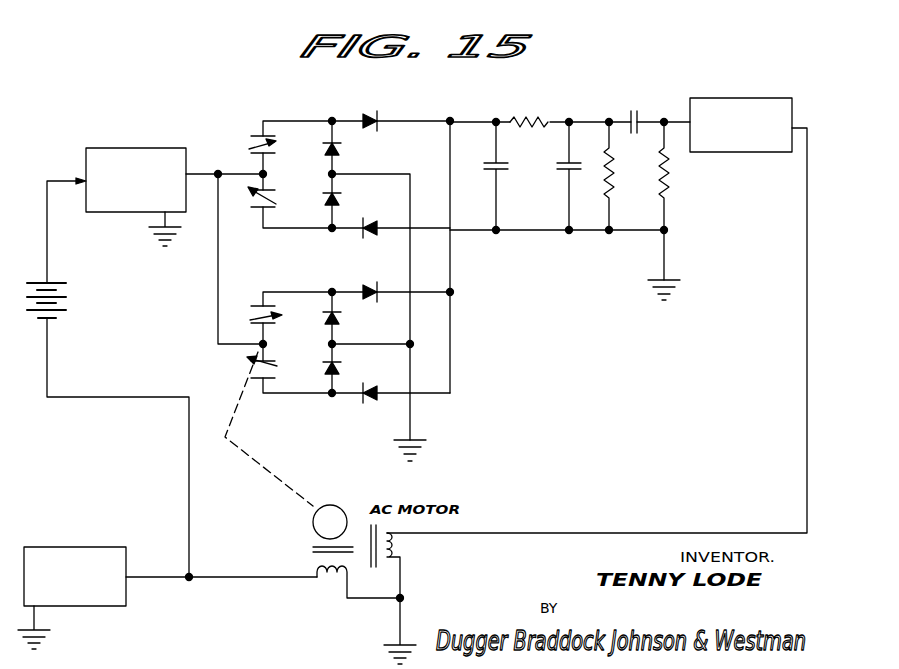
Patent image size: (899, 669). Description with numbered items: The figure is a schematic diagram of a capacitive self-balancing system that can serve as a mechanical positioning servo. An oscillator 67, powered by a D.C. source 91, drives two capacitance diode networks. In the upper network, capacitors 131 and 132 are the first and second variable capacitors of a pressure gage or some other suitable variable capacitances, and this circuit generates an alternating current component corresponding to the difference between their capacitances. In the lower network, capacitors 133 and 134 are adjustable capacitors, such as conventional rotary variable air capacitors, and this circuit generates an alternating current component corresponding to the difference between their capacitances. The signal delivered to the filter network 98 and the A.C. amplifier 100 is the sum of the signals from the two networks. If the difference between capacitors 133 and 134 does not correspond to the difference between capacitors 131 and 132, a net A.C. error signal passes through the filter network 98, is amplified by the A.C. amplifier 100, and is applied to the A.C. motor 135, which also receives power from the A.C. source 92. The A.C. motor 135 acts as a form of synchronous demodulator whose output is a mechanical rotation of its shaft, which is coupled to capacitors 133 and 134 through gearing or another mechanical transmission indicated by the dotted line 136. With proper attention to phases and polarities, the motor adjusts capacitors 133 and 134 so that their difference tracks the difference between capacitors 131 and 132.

The oscillator 67 is at (152, 125).
The D.C. source 91 is at (50, 283).
The A.C. source 92 is at (68, 547).
The filter network 98 is at (658, 108).
The A.C. amplifier 100 is at (767, 152).
The first variable capacitor 131 is at (257, 144).
The second variable capacitor 132 is at (270, 203).
The adjustable capacitor 133 is at (262, 306).
The adjustable capacitor 134 is at (250, 364).
The A.C. motor 135 is at (313, 528).
The dotted line 136 is at (257, 454).